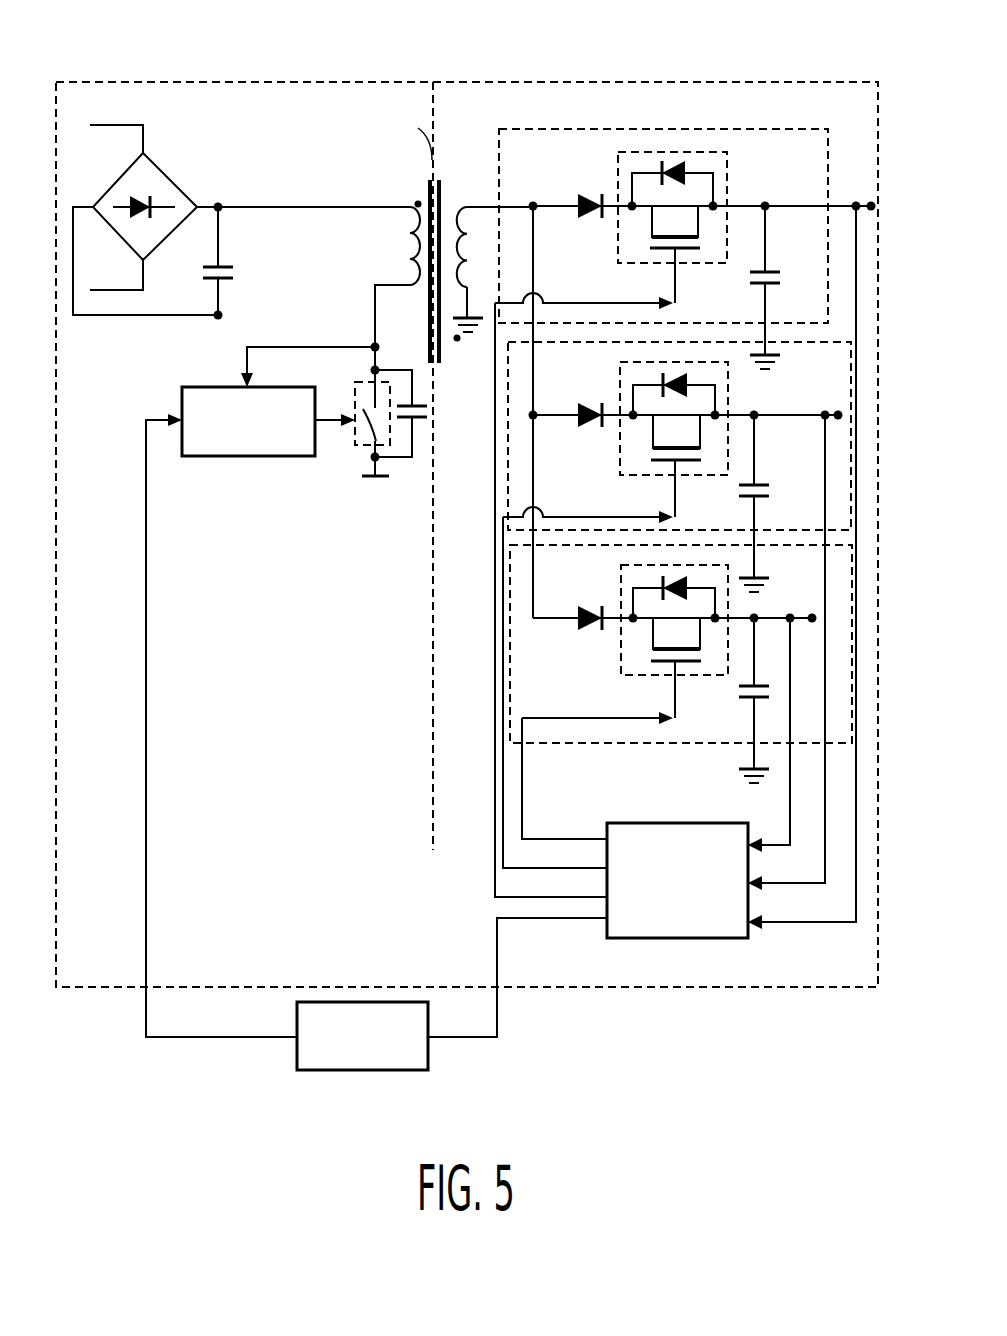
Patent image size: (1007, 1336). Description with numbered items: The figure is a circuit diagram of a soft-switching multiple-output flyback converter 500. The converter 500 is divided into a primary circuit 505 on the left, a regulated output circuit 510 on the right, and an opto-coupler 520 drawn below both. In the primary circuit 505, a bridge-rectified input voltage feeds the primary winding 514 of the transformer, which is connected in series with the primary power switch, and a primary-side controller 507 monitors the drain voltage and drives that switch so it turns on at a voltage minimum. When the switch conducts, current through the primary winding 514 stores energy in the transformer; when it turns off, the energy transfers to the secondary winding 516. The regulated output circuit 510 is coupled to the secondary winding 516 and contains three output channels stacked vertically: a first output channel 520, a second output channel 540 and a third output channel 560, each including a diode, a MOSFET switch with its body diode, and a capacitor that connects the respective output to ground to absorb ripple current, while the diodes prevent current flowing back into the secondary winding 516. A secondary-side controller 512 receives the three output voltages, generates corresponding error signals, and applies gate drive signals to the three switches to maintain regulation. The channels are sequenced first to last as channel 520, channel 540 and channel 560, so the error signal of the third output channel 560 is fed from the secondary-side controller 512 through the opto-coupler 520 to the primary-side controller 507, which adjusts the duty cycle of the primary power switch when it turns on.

The flyback converter circuit 500 is at (549, 56).
The primary circuit 505 is at (203, 82).
The regulated output circuit 510 is at (707, 82).
The opto-coupler / first output channel 520 is at (582, 129).
The primary-side controller 507 is at (208, 456).
The secondary-side controller 512 is at (643, 938).
The primary winding 514 is at (412, 250).
The secondary winding 516 is at (467, 212).
The second output channel 540 is at (826, 342).
The third output channel 560 is at (767, 545).